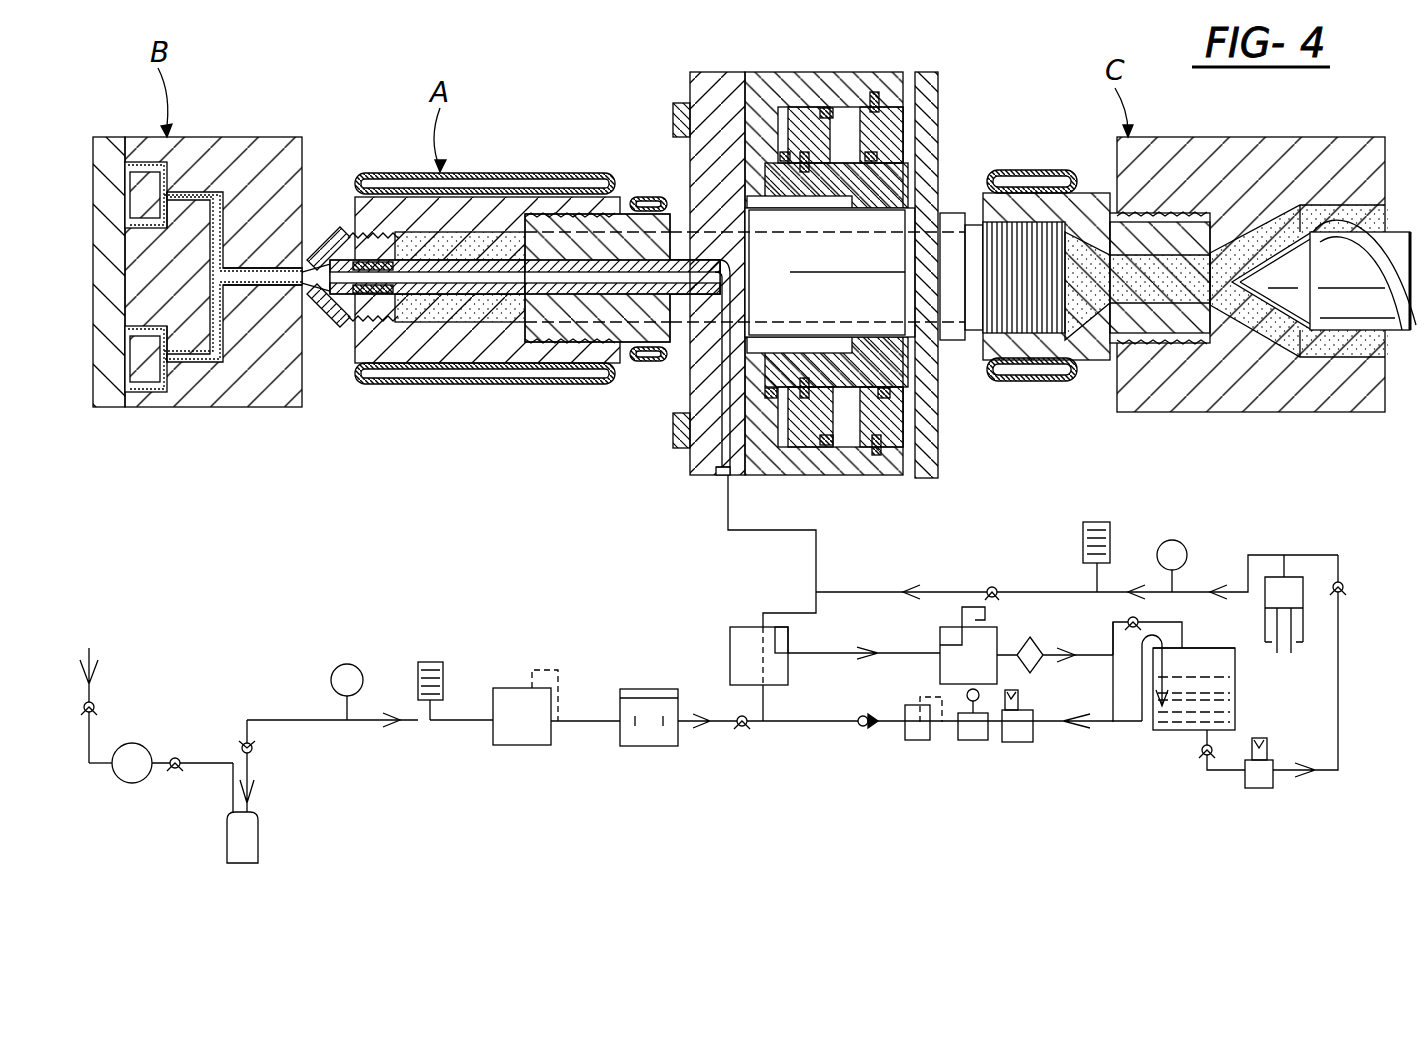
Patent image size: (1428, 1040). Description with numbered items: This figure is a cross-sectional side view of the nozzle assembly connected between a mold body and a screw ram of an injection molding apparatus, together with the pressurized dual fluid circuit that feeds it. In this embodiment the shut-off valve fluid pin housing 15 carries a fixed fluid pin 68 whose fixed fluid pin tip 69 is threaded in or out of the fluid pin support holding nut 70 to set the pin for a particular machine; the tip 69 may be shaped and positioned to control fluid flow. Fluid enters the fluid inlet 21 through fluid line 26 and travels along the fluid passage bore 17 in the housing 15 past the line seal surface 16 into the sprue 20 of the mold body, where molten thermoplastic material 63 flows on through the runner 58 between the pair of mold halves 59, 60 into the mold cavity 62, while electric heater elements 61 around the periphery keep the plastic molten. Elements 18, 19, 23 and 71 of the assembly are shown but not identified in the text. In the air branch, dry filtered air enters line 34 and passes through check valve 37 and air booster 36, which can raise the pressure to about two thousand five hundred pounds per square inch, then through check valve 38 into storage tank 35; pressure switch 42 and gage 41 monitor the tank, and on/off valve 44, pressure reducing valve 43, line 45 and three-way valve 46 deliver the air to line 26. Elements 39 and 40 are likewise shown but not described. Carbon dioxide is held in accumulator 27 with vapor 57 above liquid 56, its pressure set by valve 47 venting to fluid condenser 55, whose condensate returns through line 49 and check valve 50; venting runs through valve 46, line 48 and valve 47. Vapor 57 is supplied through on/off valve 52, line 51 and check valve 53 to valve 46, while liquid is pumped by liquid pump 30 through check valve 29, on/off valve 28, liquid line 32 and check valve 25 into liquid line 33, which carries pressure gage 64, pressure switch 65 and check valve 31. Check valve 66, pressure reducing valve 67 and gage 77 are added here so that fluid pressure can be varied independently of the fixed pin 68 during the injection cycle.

The shut-off valve fluid pin housing 15 is at (478, 295).
The line seal surface 16 is at (338, 247).
The fluid passage bore 17 is at (540, 298).
The actuator housing 18 is at (840, 72).
The end plate 19 is at (940, 112).
The sprue 20 is at (262, 290).
The fluid inlet 21 is at (727, 472).
The nozzle orifice 23 is at (333, 312).
The check valve 25 is at (1345, 592).
The fluid line 26 is at (712, 522).
The accumulator 27 is at (1240, 678).
The air operated solenoid on/off valve 28 is at (1258, 790).
The check valve 29 is at (1200, 752).
The liquid pump 30 is at (1284, 555).
The check valve 31 is at (992, 586).
The liquid line 32 is at (1341, 740).
The liquid line 33 is at (852, 590).
The line 34 is at (95, 688).
The storage tank 35 is at (262, 860).
The air booster 36 is at (135, 784).
The check valve 37 is at (100, 710).
The check valve 38 is at (176, 755).
The valve 39 is at (255, 750).
The line 40 is at (252, 812).
The gage 41 is at (333, 672).
The pressure switch 42 is at (430, 662).
The pressure reducing valve 43 is at (510, 688).
The on/off valve 44 is at (637, 748).
The line 45 is at (740, 716).
The three-way valve 46 is at (730, 648).
The three-way valve 47 is at (940, 645).
The line 48 is at (820, 655).
The line 49 is at (1066, 660).
The check valve 50 is at (1140, 620).
The vapor supply line 51 is at (1138, 680).
The on/off valve 52 is at (1020, 745).
The check valve 53 is at (862, 730).
The fluid condenser 55 is at (1033, 640).
The liquid carbon dioxide 56 is at (1228, 716).
The carbon dioxide vapor 57 is at (1226, 665).
The runner 58 is at (215, 362).
The mold half 59 is at (103, 150).
The mold half 60 is at (212, 137).
The electric heater elements 61 is at (530, 172).
The mold cavity 62 is at (147, 372).
The thermoplastic material 63 is at (262, 262).
The pressure gage 64 is at (1183, 552).
The pressure switch 65 is at (1110, 540).
The check valve 66 is at (742, 730).
The pressure reducing valve 67 is at (915, 742).
The fixed fluid pin 68 is at (378, 310).
The fixed fluid pin tip 69 is at (310, 255).
The fluid pin support holding nut 70 is at (420, 292).
The barrel 71 is at (478, 200).
The gage 77 is at (972, 742).